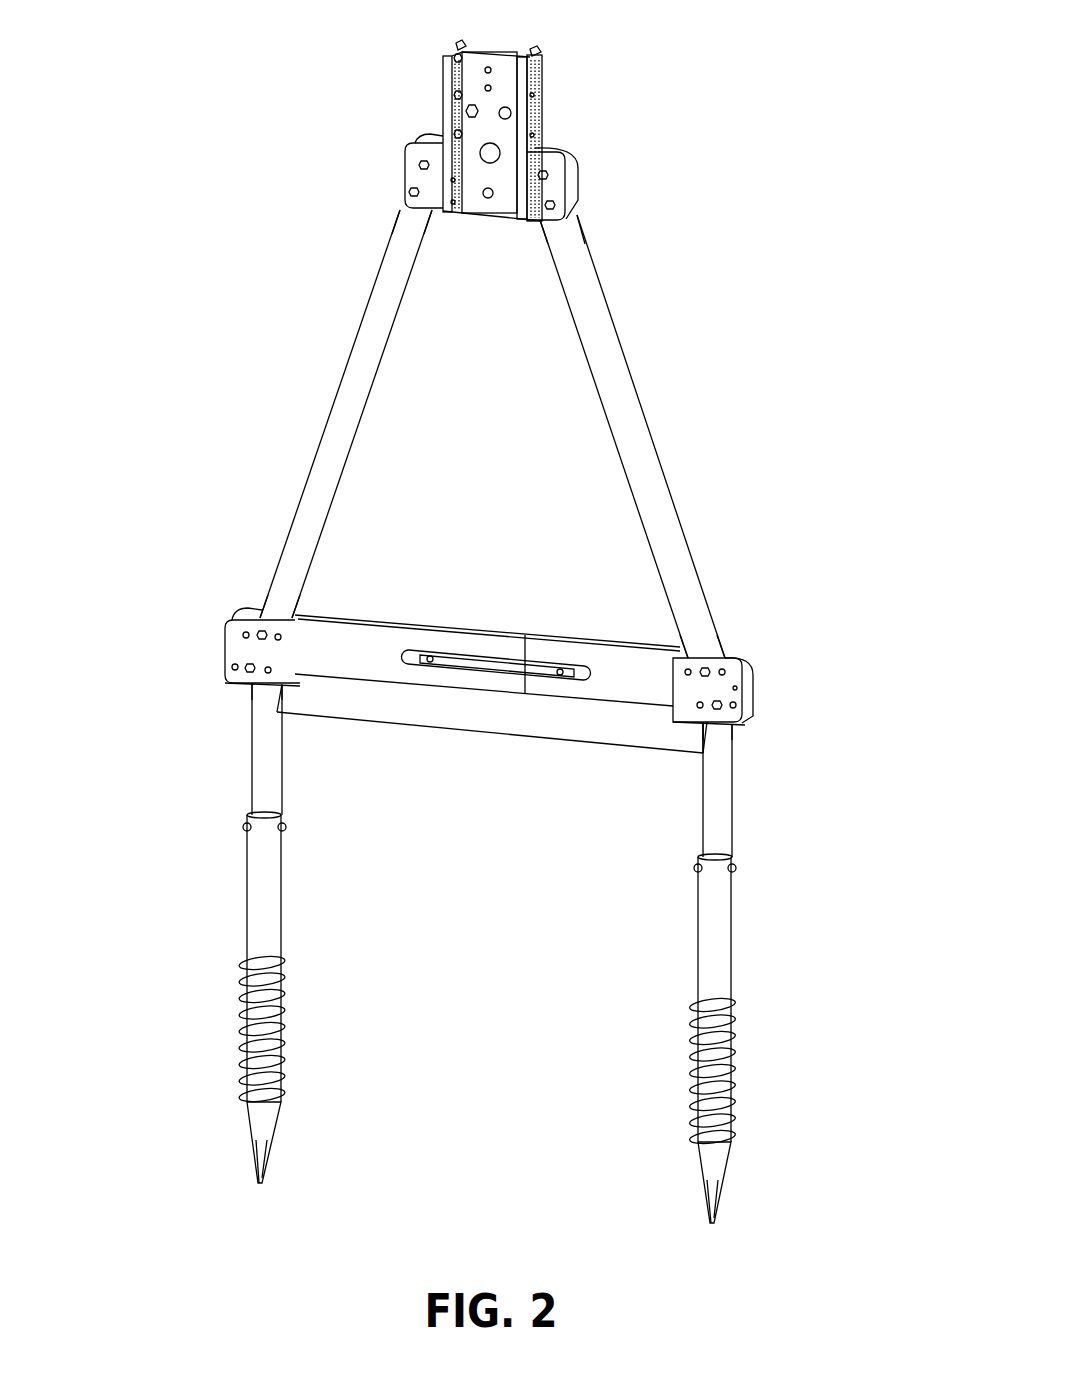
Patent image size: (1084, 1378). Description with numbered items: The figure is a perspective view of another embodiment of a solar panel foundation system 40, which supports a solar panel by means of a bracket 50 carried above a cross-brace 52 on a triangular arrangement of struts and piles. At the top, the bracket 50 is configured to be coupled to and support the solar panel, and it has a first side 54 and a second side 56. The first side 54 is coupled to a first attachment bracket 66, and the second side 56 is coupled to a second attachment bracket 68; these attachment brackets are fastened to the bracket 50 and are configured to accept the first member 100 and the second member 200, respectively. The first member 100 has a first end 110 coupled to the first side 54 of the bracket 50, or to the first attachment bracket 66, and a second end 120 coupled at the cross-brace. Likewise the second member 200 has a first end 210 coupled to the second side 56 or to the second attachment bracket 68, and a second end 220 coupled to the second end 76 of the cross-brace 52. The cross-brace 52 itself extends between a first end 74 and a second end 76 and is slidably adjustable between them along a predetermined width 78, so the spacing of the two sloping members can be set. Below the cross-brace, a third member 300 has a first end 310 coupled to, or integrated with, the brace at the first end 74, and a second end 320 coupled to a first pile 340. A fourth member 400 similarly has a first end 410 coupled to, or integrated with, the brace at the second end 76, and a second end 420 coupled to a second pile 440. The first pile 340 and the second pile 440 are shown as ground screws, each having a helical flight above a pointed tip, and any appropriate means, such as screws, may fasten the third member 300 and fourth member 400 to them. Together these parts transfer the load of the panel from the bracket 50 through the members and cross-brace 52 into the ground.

The foundation system 40 is at (780, 240).
The bracket 50 is at (500, 98).
The cross-brace 52 is at (495, 615).
The first side 54 is at (440, 112).
The second side 56 is at (548, 125).
The first attachment bracket 66 is at (417, 163).
The second attachment bracket 68 is at (555, 185).
The first end 74 is at (307, 627).
The second end 76 is at (662, 660).
The predetermined width 78 is at (487, 735).
The first member 100 is at (375, 292).
The first end 110 is at (395, 195).
The second end 120 is at (255, 597).
The second member 200 is at (620, 300).
The first end 210 is at (585, 207).
The second end 220 is at (730, 638).
The third member 300 is at (257, 793).
The first end 310 is at (247, 692).
The second end 320 is at (247, 803).
The first pile 340 is at (245, 1022).
The fourth member 400 is at (727, 827).
The first end 410 is at (740, 735).
The second end 420 is at (738, 847).
The second pile 440 is at (750, 1045).